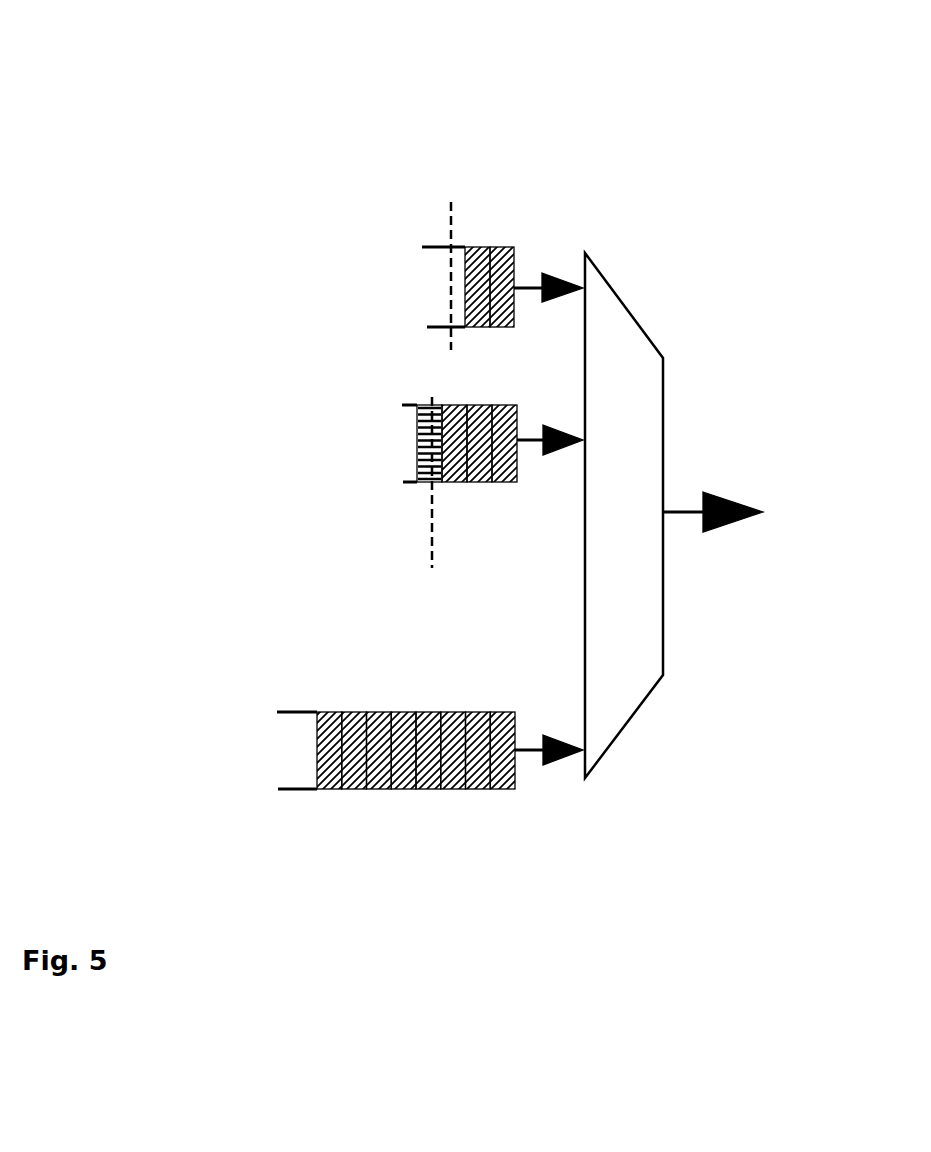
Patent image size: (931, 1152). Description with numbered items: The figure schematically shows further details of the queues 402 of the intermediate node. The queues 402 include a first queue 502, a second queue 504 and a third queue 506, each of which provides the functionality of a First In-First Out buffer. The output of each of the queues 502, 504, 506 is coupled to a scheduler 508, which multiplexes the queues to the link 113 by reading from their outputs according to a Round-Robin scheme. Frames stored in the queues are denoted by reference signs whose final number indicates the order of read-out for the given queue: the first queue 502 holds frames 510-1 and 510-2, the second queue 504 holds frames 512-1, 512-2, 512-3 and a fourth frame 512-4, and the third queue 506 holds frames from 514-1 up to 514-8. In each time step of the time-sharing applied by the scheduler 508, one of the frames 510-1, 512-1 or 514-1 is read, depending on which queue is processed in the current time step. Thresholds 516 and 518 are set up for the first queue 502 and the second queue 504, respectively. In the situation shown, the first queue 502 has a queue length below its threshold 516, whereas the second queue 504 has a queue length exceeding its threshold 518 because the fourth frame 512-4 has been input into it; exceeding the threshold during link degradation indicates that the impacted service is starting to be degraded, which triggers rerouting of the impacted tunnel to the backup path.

The queues 402 is at (172, 43).
The first queue 502 is at (411, 287).
The second queue 504 is at (390, 448).
The third queue 506 is at (262, 745).
The scheduler 508 is at (618, 320).
The frame 510-1 is at (512, 327).
The frame 510-2 is at (477, 327).
The frame 512-1 is at (513, 483).
The frame 512-2 is at (480, 483).
The frame 512-3 is at (453, 483).
The fourth frame 512-4 is at (417, 468).
The frame 514-1 is at (510, 789).
The frame 514-8 is at (328, 789).
The threshold 516 is at (452, 211).
The threshold 518 is at (432, 527).
The link 113 is at (738, 509).